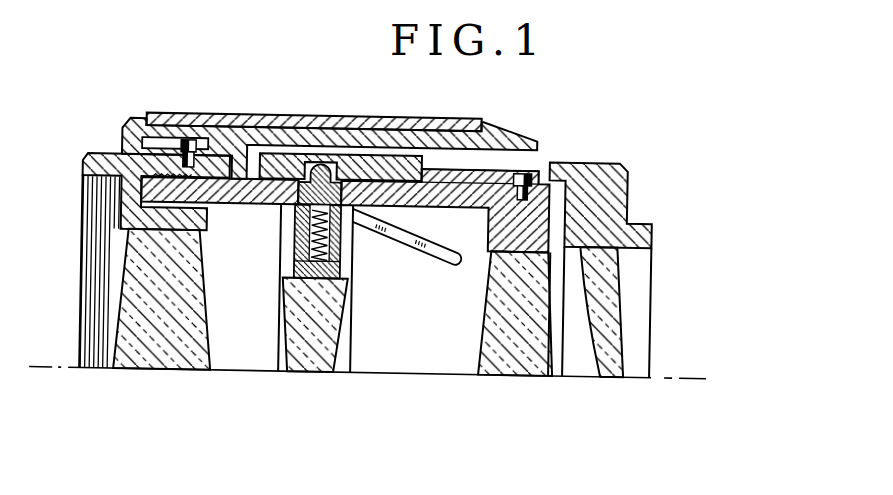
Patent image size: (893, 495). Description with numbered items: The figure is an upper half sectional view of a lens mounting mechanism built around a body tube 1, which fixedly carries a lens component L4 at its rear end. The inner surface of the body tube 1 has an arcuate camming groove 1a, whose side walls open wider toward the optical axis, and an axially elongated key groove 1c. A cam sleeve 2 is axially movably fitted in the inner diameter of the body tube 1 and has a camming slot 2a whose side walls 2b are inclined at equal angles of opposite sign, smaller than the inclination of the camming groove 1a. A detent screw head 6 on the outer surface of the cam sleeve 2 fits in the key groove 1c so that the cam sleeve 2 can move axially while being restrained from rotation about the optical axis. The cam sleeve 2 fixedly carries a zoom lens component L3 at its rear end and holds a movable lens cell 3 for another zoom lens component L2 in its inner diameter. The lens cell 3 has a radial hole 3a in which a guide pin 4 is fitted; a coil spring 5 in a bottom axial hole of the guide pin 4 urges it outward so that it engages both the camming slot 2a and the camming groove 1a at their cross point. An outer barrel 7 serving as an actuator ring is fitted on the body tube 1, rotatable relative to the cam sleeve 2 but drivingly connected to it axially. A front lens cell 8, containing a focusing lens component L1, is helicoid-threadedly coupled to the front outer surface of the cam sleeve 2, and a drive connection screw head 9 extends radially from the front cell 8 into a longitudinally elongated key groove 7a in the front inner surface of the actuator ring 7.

The body tube 1 is at (391, 190).
The arcuate camming groove 1a is at (323, 169).
The axially elongated key groove 1c is at (498, 171).
The cam sleeve 2 is at (408, 159).
The camming slot 2a is at (439, 242).
The side walls of camming slot 2b is at (393, 169).
The movable lens cell 3 is at (352, 252).
The radial hole 3a is at (282, 256).
The guide pin 4 is at (298, 213).
The coil spring 5 is at (344, 273).
The detent screw head 6 is at (545, 155).
The outer barrel 7 is at (252, 131).
The longitudinally elongated key groove 7a is at (155, 137).
The front lens cell 8 is at (108, 159).
The drive connection screw head 9 is at (188, 137).
The focusing lens component L1 is at (160, 360).
The zoom lens component L2 is at (318, 360).
The zoom lens component L3 is at (522, 362).
The lens component L4 is at (614, 365).